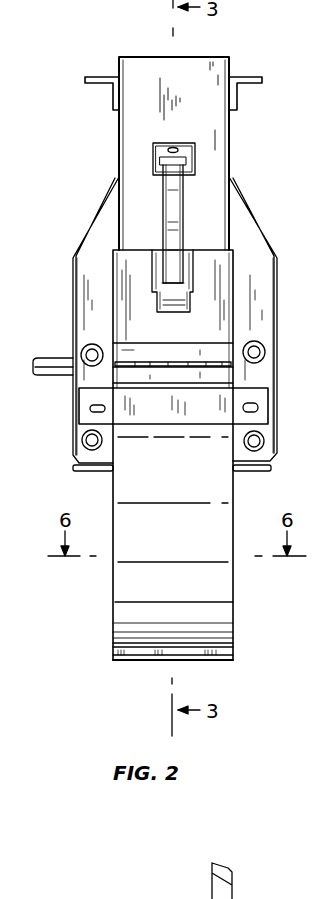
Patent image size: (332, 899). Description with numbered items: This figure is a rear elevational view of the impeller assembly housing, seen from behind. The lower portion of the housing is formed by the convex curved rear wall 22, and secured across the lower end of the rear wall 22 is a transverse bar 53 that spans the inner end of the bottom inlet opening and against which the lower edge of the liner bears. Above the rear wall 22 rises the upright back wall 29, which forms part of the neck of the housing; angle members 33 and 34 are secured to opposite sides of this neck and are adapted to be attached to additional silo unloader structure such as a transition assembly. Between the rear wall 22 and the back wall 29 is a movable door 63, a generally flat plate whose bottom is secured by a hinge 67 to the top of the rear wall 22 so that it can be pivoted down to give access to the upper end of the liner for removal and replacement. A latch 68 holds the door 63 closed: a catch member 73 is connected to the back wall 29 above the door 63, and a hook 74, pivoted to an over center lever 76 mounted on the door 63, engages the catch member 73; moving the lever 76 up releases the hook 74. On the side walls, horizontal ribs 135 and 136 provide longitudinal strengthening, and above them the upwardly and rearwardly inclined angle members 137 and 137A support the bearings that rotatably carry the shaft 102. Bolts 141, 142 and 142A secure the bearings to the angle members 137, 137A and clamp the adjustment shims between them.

The rear wall 22 is at (187, 548).
The back wall 29 is at (192, 108).
The angle member 33 is at (95, 85).
The angle member 34 is at (250, 85).
The transverse bar 53 is at (152, 657).
The door 63 is at (121, 284).
The hinge 67 is at (205, 362).
The latch 68 is at (150, 203).
The catch member 73 is at (153, 158).
The hook 74 is at (175, 207).
The over center lever 76 is at (181, 300).
The shaft 102 is at (60, 358).
The horizontal rib 135 is at (251, 471).
The horizontal rib 136 is at (95, 473).
The angle member 137 is at (248, 243).
The second angle member 137A is at (80, 301).
The bolt 141 is at (265, 352).
The bolt 142 is at (265, 441).
The bolt 142A is at (82, 440).